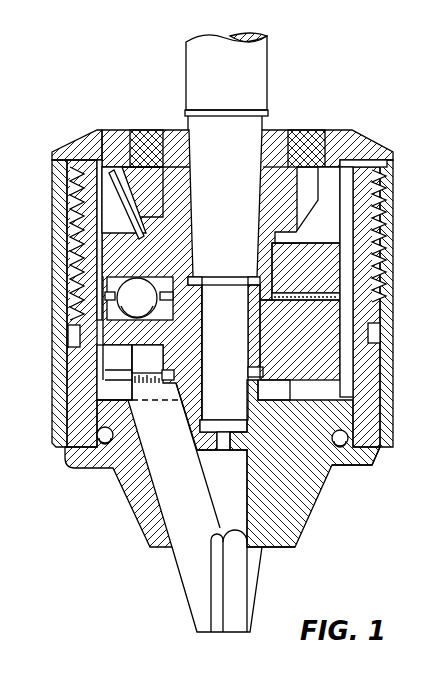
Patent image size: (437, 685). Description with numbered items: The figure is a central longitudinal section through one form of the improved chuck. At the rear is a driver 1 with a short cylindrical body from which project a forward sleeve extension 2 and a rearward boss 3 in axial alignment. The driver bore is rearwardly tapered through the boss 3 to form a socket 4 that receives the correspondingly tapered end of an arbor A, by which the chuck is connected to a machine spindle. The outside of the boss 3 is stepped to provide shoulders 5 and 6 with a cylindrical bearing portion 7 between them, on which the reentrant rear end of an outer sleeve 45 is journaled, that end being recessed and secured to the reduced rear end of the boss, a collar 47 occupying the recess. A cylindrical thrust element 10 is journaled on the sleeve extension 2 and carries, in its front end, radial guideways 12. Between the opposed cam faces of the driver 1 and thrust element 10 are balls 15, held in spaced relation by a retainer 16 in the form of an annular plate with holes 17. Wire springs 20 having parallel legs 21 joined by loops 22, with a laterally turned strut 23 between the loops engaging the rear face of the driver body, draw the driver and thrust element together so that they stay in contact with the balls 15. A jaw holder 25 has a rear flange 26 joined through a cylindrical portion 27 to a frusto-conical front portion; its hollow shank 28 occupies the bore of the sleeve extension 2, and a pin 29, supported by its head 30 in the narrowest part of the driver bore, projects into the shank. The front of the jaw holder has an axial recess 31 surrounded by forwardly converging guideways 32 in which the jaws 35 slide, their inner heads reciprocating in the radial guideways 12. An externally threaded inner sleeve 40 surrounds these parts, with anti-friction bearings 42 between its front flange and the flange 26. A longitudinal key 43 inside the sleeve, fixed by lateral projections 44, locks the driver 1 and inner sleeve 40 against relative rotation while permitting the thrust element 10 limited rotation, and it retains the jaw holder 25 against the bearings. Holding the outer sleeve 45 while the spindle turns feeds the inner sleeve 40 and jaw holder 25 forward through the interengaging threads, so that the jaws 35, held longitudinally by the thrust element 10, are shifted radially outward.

The arbor A is at (248, 70).
The driver 1 is at (373, 232).
The sleeve extension 2 is at (225, 85).
The boss 3 is at (275, 140).
The socket 4 is at (180, 155).
The shoulder 5 is at (320, 132).
The shoulder 6 is at (307, 205).
The bearing portion 7 is at (162, 188).
The thrust element 10 is at (325, 353).
The radial guideways 12 is at (117, 360).
The balls 15 is at (128, 290).
The retainer 16 is at (318, 245).
The holes 17 is at (200, 314).
The springs 20 is at (100, 178).
The legs 21 is at (58, 203).
The loops 22 is at (150, 207).
The strut 23 is at (142, 238).
The jaw holder 25 is at (300, 495).
The rear flange 26 is at (352, 410).
The cylindrical portion 27 is at (333, 470).
The shank 28 is at (250, 368).
The pin 29 is at (202, 350).
The head 30 is at (240, 272).
The axial recess 31 is at (252, 516).
The guideways 32 is at (157, 495).
The jaws 35 is at (193, 562).
The inner sleeve 40 is at (370, 383).
The anti-friction bearings 42 is at (352, 447).
The key 43 is at (347, 172).
The lateral projections 44 is at (380, 205).
The outer sleeve 45 is at (388, 262).
The collar 47 is at (306, 136).